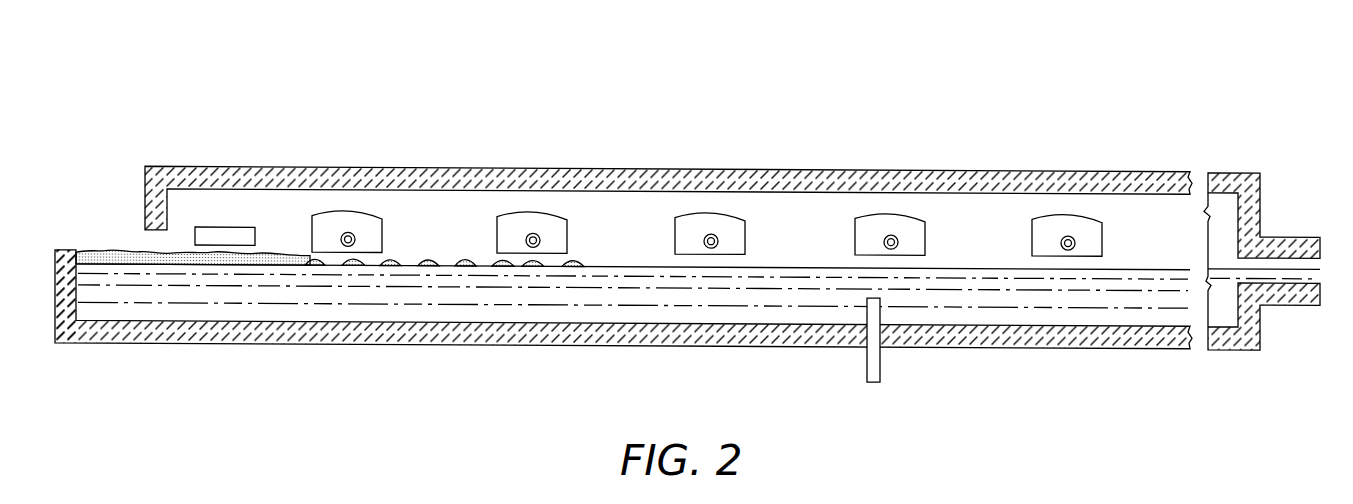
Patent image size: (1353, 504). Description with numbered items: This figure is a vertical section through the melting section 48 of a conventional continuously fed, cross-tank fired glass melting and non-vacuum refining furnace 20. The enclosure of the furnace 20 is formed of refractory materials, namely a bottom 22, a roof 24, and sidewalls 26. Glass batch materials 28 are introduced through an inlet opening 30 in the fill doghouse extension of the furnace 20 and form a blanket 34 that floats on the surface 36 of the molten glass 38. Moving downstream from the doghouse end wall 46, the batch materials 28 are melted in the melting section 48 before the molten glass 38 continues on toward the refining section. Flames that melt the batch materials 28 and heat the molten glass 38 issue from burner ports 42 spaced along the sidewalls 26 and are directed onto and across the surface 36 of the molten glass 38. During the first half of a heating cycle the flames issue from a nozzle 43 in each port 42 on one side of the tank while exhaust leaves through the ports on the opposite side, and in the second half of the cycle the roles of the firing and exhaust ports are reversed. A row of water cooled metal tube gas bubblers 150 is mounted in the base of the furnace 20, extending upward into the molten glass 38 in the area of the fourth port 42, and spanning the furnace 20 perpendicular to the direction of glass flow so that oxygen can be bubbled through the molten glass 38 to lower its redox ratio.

The glass melting furnace 20 is at (1033, 90).
The bottom 22 is at (969, 343).
The roof 24 is at (897, 163).
The sidewalls 26 is at (644, 209).
The glass batch materials 28 is at (177, 252).
The inlet opening 30 is at (107, 235).
The blanket 34 is at (285, 252).
The surface of molten glass 36 is at (826, 263).
The molten glass 38 is at (710, 296).
The burner ports 42 is at (372, 241).
The nozzle 43 is at (351, 231).
The doghouse end wall 46 is at (55, 292).
The melting section 48 is at (1098, 162).
The gas bubblers 150 is at (866, 356).